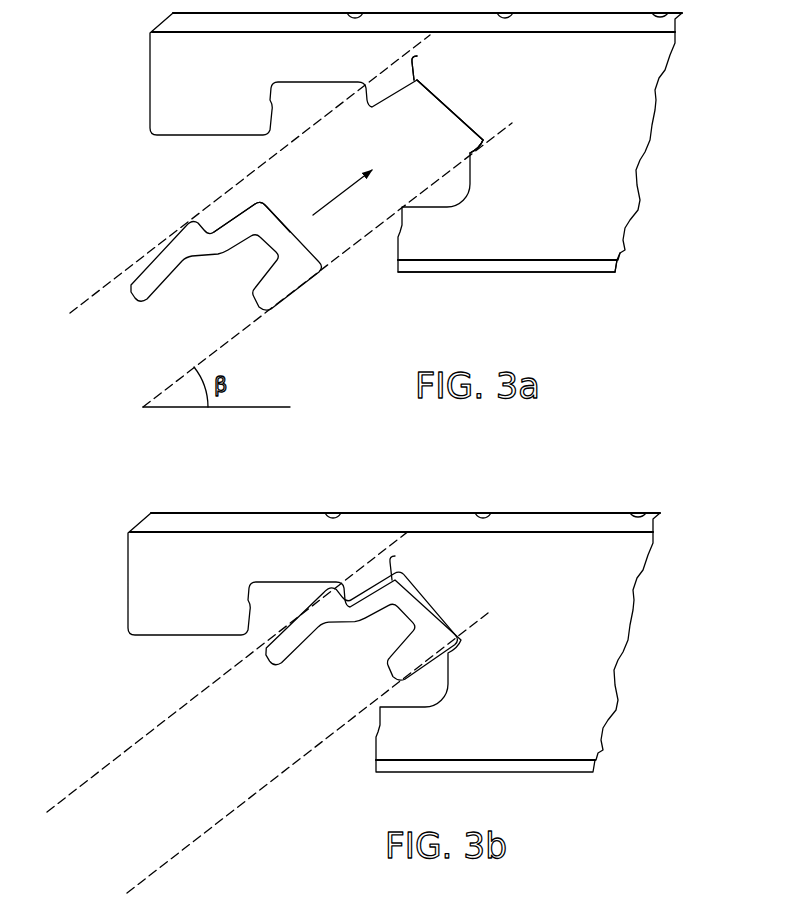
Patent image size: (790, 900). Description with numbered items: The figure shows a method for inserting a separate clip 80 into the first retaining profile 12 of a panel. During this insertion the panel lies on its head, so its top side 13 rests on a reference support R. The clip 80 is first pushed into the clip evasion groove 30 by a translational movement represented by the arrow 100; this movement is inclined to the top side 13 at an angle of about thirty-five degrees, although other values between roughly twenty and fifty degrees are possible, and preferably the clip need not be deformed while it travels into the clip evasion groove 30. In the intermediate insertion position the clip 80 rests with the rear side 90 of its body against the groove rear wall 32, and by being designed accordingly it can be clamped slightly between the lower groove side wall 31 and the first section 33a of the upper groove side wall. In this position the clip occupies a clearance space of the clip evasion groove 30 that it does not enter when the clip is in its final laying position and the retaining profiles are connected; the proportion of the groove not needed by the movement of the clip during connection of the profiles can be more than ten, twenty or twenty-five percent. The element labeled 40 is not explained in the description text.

In FIG. 3A, the first retaining profile 12 is at (529, 241).
In FIG. 3A, the top side 13 is at (492, 274).
In FIG. 3A, the reference support R is at (597, 274).
In FIG. 3A, the clip evasion groove 30 is at (482, 107).
In FIG. 3A, the lower groove side wall 31 is at (417, 56).
In FIG. 3A, the groove rear wall 32 is at (450, 108).
In FIG. 3A, the first section of the upper groove side wall 33a is at (483, 140).
In FIG. 3A, the panel 40 is at (614, 132).
In FIG. 3A, the clip 80 is at (284, 306).
In FIG. 3B, the clip 80 is at (312, 652).
In FIG. 3A, the rear side of the body 90 is at (297, 192).
In FIG. 3A, the arrow 100 is at (343, 191).